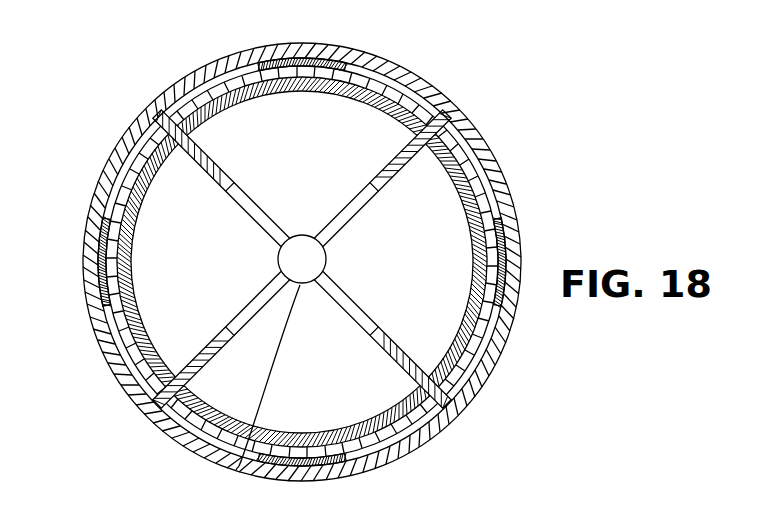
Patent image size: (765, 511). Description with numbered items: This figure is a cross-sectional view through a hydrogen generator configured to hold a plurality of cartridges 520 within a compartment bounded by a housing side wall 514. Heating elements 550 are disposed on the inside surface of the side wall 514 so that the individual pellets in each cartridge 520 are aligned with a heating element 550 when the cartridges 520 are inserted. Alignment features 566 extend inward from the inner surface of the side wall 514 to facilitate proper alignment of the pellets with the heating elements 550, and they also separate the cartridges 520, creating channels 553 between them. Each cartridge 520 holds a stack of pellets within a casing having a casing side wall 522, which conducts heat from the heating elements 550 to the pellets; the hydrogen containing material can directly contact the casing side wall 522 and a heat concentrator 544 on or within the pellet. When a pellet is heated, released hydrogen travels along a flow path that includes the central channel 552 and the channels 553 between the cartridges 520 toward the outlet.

The side wall 514 is at (498, 148).
The cartridge 520 is at (355, 133).
The casing side wall 522 is at (453, 368).
The heat concentrator 544 is at (373, 428).
The heating element 550 is at (327, 63).
The central channel 552 is at (245, 442).
The channel 553 is at (261, 205).
The alignment feature 566 is at (198, 170).